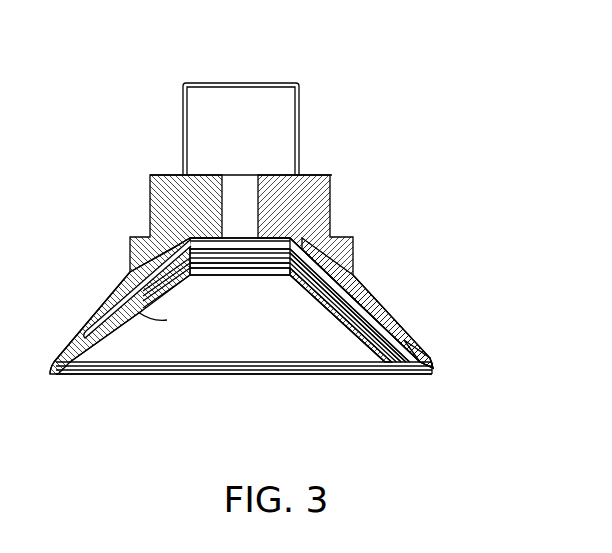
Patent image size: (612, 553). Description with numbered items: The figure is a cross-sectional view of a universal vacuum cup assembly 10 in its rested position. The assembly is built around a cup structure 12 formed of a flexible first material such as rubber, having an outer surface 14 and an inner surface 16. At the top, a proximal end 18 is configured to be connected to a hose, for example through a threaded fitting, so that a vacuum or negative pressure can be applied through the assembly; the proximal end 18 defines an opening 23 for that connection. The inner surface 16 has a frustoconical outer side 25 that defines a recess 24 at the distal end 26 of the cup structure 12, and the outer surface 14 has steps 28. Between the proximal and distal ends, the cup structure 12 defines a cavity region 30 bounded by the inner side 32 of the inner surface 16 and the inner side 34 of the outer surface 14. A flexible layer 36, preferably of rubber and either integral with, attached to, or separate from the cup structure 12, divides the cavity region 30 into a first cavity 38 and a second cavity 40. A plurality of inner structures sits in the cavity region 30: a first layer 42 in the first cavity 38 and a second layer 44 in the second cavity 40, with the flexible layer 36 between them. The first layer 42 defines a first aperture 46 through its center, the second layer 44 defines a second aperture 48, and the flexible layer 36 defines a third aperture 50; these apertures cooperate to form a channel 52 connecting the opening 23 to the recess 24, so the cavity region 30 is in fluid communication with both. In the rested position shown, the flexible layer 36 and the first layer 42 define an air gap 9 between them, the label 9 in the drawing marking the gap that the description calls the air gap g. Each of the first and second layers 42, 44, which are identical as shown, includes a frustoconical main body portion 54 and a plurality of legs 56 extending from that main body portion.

The vacuum cup assembly 10 is at (480, 89).
The cup structure 12 is at (251, 247).
The outer surface 14 is at (360, 262).
The inner surface 16 is at (347, 348).
The proximal end 18 is at (273, 104).
The opening 23 is at (231, 105).
The recess 24 is at (140, 336).
The outer side 25 is at (107, 304).
The distal end 26 is at (150, 385).
The steps 28 is at (134, 191).
The cavity region 30 is at (412, 337).
The inner side 32 is at (381, 347).
The inner side 34 is at (322, 292).
The flexible layer 36 is at (358, 278).
The first cavity 38 is at (380, 304).
The second cavity 40 is at (258, 319).
The first layer 42 is at (277, 245).
The second layer 44 is at (223, 267).
The first aperture 46 is at (238, 247).
The second aperture 48 is at (257, 267).
The third aperture 50 is at (240, 266).
The channel 52 is at (180, 255).
The frustoconical main body portion 54 is at (150, 258).
The legs 56 is at (407, 328).
The sleeve 9 is at (355, 265).